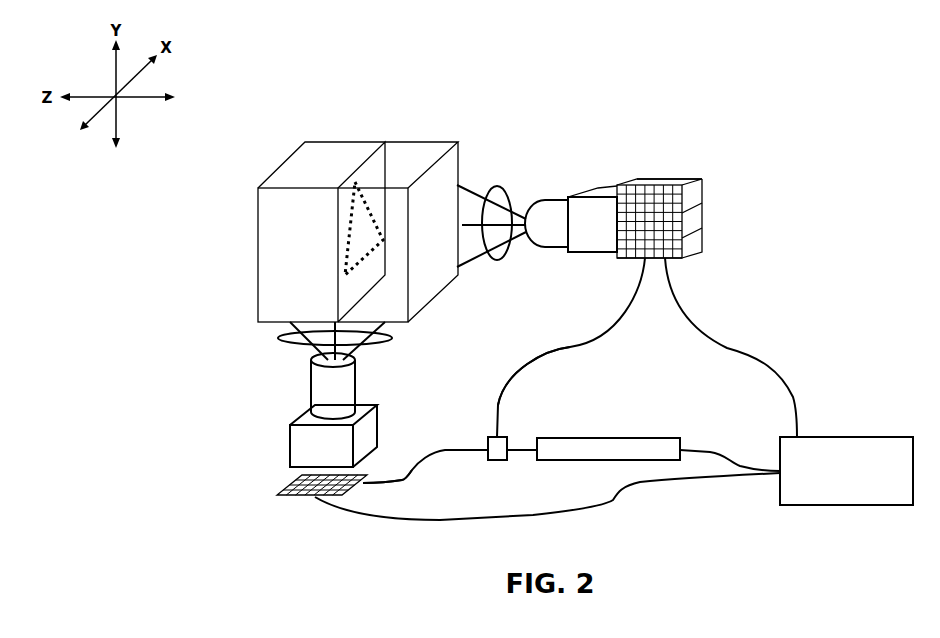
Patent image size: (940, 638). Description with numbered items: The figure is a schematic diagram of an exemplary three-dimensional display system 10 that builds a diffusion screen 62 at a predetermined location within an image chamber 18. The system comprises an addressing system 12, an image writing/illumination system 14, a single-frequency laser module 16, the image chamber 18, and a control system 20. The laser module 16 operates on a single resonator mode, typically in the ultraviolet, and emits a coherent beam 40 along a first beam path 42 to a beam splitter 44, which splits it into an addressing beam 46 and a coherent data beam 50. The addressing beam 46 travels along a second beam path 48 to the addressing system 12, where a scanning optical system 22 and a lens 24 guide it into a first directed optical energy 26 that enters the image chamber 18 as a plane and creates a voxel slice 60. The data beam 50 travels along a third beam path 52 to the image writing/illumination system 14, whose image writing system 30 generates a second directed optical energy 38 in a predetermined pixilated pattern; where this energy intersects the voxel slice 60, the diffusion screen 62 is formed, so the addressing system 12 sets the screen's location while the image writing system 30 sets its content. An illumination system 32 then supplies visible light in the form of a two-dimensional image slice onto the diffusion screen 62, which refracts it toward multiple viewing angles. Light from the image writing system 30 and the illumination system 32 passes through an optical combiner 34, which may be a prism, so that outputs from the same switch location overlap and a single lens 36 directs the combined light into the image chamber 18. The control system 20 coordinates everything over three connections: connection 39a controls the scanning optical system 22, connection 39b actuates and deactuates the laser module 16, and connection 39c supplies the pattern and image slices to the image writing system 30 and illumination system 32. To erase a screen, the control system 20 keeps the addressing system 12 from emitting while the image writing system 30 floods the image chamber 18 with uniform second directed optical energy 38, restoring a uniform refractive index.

The three-dimensional display system 10 is at (636, 84).
The addressing system 12 is at (288, 445).
The image writing/illumination system 14 is at (597, 187).
The single-frequency laser module 16 is at (647, 438).
The image chamber 18 is at (447, 140).
The control system 20 is at (862, 437).
The scanning optical system 22 is at (289, 495).
The lens 24 is at (305, 382).
The first directed optical energy 26 is at (276, 338).
The image writing system 30 is at (634, 259).
The illumination system 32 is at (692, 255).
The optical combiner 34 is at (674, 180).
The lens 36 is at (544, 248).
The second directed optical energy 38 is at (500, 186).
The connection 39a is at (537, 515).
The connection 39b is at (715, 452).
The connection 39c is at (767, 361).
The beam 40 is at (522, 449).
The first beam path 42 is at (513, 454).
The beam splitter 44 is at (490, 460).
The addressing beam 46 is at (440, 450).
The second beam path 48 is at (402, 480).
The data beam 50 is at (525, 363).
The third beam path 52 is at (553, 350).
The voxel slice 60 is at (365, 157).
The diffusion screen 62 is at (324, 259).